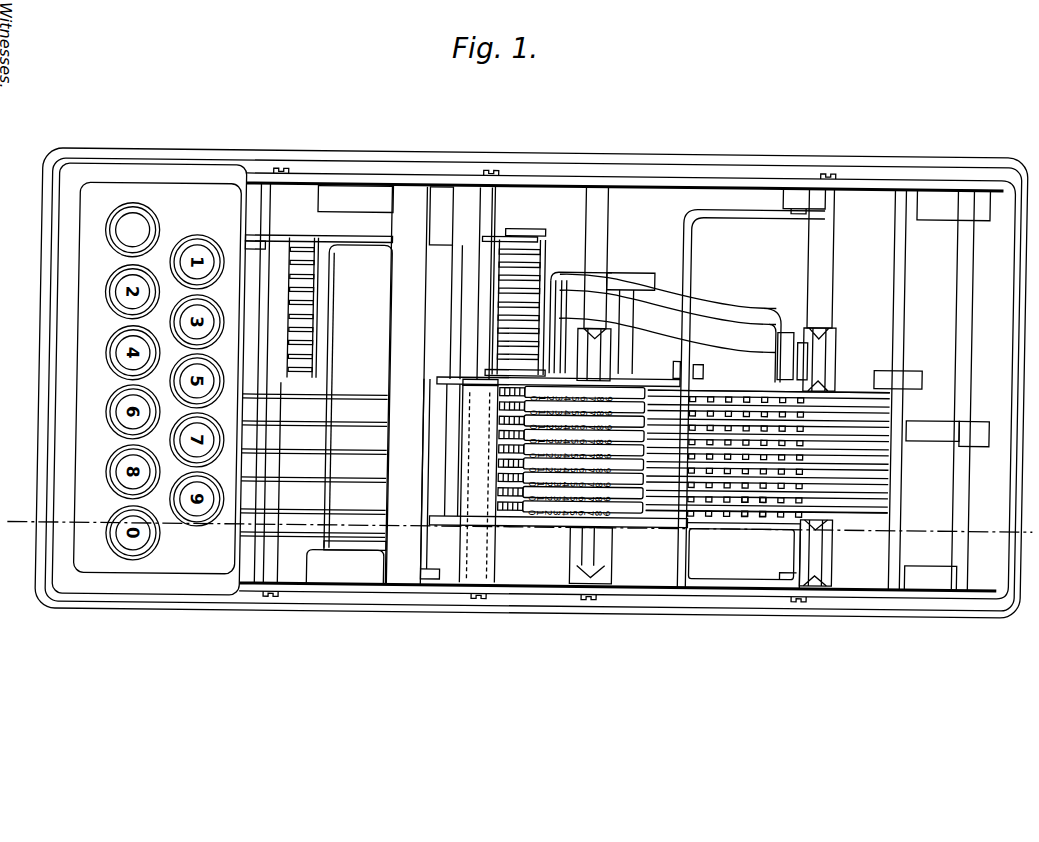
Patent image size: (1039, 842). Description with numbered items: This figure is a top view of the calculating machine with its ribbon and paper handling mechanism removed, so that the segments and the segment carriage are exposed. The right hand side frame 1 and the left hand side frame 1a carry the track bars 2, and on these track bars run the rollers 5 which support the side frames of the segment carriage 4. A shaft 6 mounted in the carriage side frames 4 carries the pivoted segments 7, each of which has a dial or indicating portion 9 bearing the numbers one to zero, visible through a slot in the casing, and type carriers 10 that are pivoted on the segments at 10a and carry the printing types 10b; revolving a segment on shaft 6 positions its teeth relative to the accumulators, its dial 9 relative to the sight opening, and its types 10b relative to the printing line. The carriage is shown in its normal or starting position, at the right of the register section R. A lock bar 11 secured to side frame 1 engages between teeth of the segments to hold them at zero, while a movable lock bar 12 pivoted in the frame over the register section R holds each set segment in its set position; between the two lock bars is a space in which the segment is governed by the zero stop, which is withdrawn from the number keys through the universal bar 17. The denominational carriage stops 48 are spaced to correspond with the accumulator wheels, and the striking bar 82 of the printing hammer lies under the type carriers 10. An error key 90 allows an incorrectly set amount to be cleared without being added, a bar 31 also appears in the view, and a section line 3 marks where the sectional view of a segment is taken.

The right hand side frame 1 is at (870, 586).
The left hand side frame 1a is at (847, 186).
The track bars 2 is at (595, 207).
The section line 3 is at (521, 529).
The side frames of the segment carriage 4 is at (732, 527).
The rollers 5 is at (822, 550).
The shaft 6 is at (693, 527).
The segments 7 is at (762, 500).
The dial or indicating portion 9 is at (629, 506).
The type carriers 10 is at (872, 493).
The pivot 10a is at (733, 398).
The printing types 10b is at (752, 500).
The lock bar 11 is at (493, 555).
The movable lock bar 12 is at (417, 208).
The universal bar 17 is at (555, 280).
The bar 31 is at (328, 495).
The denominational carriage stops 48 is at (514, 280).
The striking bar 82 is at (682, 243).
The error key 90 is at (145, 220).
The register section R is at (370, 268).